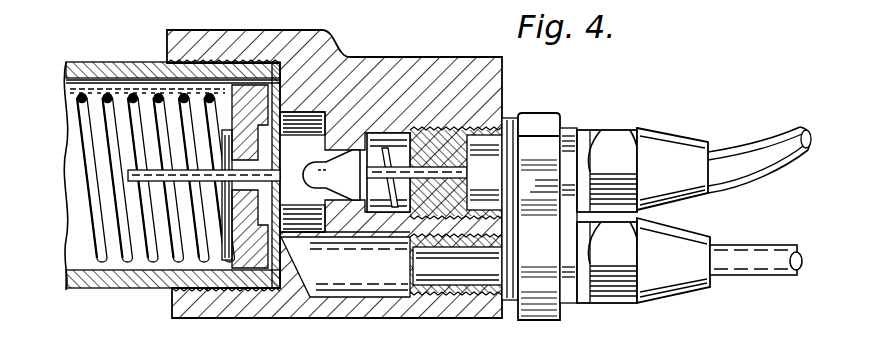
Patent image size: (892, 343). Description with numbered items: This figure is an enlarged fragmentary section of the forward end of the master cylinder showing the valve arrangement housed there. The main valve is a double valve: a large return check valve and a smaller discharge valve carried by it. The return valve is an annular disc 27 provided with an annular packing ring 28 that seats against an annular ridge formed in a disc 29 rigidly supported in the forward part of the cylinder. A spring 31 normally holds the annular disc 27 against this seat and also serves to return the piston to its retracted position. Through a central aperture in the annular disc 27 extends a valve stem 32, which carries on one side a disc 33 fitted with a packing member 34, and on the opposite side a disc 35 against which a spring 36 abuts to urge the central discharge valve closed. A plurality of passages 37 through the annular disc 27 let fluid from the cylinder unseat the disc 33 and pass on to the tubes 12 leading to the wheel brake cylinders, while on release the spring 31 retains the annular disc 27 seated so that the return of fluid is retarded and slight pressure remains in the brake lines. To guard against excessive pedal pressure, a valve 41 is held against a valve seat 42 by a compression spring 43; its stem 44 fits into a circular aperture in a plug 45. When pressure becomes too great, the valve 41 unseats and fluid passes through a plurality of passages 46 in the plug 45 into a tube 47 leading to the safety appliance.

The tubes 12 is at (748, 268).
The annular disc 27 is at (264, 95).
The annular packing ring 28 is at (296, 114).
The disc 29 is at (284, 262).
The spring 31 is at (86, 95).
The valve stem 32 is at (150, 97).
The disc 33 is at (225, 187).
The packing member 34 is at (302, 216).
The disc 35 is at (166, 288).
The spring 36 is at (208, 193).
The passages 37 is at (244, 93).
The valve 41 is at (368, 163).
The valve seat 42 is at (358, 150).
The compression spring 43 is at (398, 172).
The stem 44 is at (380, 172).
The plug 45 is at (504, 113).
The passages 46 is at (432, 145).
The tube 47 is at (748, 156).